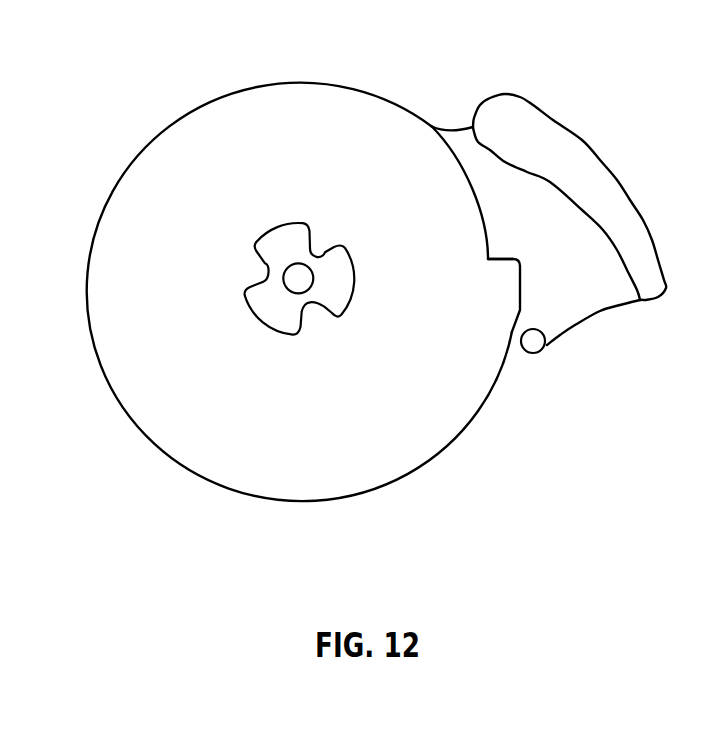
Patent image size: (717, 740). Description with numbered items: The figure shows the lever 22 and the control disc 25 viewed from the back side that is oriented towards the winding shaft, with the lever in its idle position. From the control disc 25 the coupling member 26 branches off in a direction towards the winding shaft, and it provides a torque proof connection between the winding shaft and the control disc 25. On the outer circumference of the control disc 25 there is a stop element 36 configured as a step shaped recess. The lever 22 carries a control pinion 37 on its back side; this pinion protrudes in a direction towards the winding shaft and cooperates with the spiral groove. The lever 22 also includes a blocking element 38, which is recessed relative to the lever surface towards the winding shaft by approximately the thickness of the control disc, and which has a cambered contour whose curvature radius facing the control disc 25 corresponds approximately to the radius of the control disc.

The lever 22 is at (602, 327).
The control disc 25 is at (128, 433).
The coupling member 26 is at (297, 210).
The stop element 36 is at (502, 253).
The control pinion 37 is at (532, 340).
The blocking element 38 is at (627, 231).